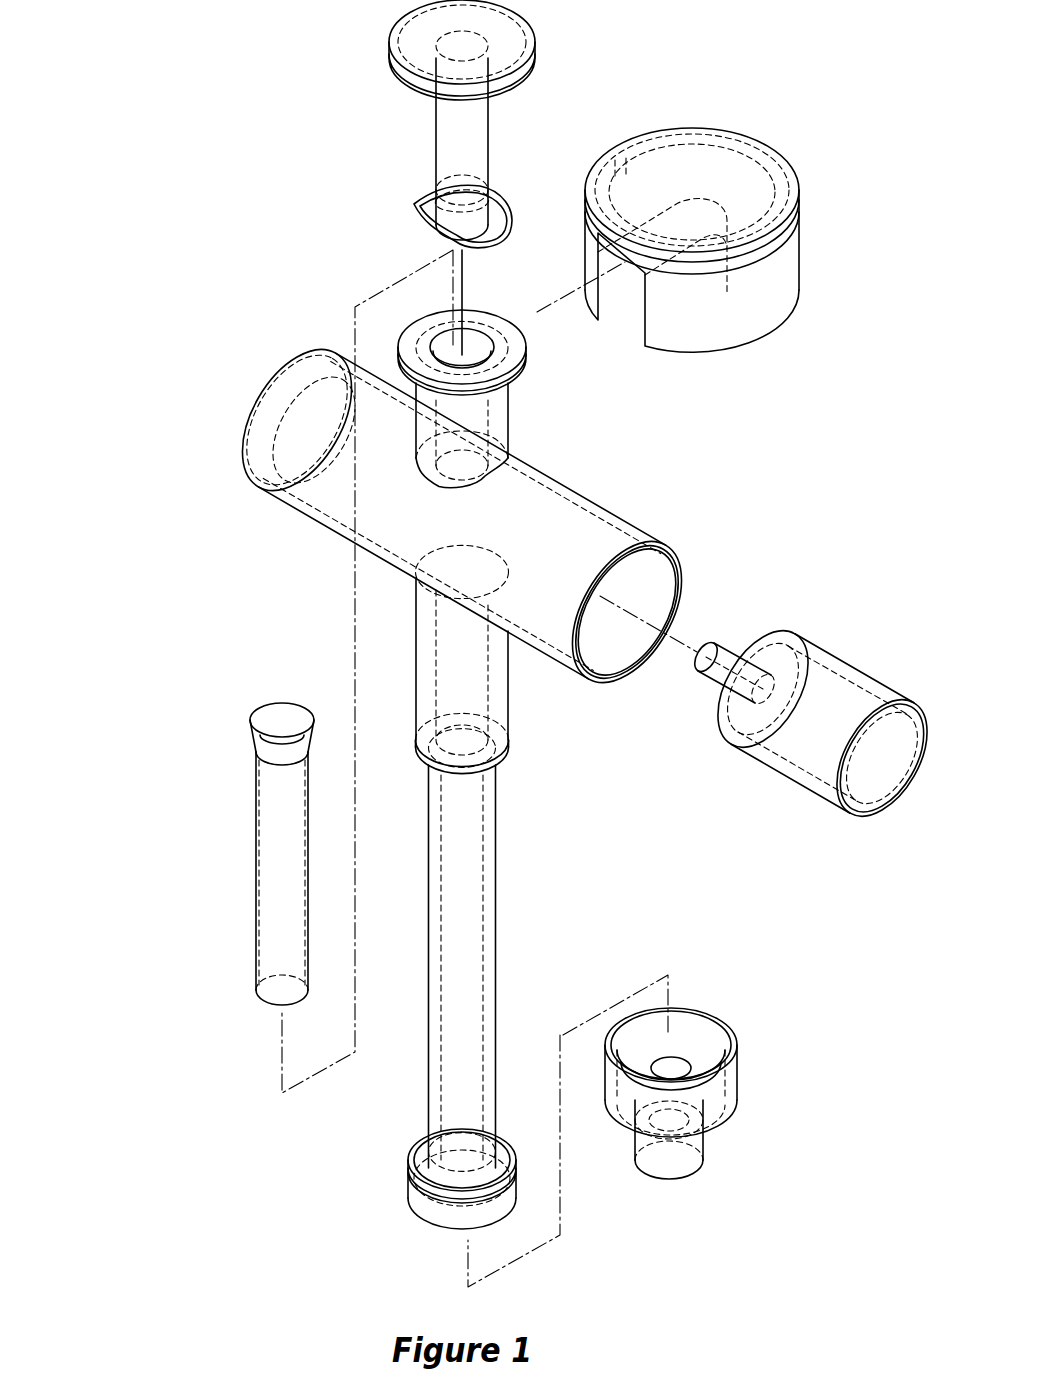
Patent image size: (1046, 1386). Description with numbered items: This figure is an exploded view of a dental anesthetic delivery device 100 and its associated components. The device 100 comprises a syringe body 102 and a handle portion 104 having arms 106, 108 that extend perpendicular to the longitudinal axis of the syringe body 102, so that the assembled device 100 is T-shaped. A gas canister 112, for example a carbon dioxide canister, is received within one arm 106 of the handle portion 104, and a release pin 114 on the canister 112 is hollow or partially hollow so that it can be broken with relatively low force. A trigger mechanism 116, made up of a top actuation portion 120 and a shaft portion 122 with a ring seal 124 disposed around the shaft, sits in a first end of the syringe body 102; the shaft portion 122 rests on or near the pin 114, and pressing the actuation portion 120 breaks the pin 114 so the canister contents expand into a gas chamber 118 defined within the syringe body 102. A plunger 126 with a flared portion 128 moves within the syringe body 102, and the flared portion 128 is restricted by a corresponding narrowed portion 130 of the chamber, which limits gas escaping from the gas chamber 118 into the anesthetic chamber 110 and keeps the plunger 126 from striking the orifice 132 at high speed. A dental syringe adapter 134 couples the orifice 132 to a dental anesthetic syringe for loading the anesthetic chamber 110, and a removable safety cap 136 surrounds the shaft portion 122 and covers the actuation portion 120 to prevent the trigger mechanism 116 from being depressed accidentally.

The dental anesthetic delivery device 100 is at (198, 215).
The syringe body 102 is at (503, 675).
The handle portion 104 is at (530, 453).
The arm 106 is at (643, 531).
The arm 108 is at (292, 506).
The anesthetic chamber 110 is at (475, 944).
The gas canister 112 is at (847, 664).
The release pin 114 is at (720, 650).
The trigger mechanism 116 is at (395, 109).
The gas chamber 118 is at (568, 486).
The top actuation portion 120 is at (527, 22).
The shaft portion 122 is at (488, 127).
The ring seal 124 is at (416, 205).
The plunger 126 is at (265, 883).
The flared portion 128 is at (254, 738).
The narrowed portion 130 is at (502, 753).
The orifice 132 is at (412, 1205).
The dental syringe adapter 134 is at (737, 1070).
The removable safety cap 136 is at (753, 149).